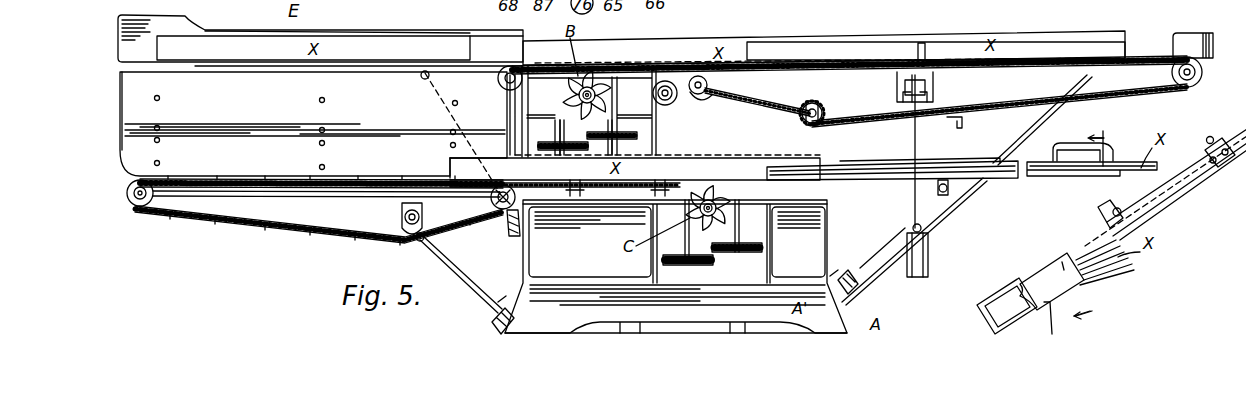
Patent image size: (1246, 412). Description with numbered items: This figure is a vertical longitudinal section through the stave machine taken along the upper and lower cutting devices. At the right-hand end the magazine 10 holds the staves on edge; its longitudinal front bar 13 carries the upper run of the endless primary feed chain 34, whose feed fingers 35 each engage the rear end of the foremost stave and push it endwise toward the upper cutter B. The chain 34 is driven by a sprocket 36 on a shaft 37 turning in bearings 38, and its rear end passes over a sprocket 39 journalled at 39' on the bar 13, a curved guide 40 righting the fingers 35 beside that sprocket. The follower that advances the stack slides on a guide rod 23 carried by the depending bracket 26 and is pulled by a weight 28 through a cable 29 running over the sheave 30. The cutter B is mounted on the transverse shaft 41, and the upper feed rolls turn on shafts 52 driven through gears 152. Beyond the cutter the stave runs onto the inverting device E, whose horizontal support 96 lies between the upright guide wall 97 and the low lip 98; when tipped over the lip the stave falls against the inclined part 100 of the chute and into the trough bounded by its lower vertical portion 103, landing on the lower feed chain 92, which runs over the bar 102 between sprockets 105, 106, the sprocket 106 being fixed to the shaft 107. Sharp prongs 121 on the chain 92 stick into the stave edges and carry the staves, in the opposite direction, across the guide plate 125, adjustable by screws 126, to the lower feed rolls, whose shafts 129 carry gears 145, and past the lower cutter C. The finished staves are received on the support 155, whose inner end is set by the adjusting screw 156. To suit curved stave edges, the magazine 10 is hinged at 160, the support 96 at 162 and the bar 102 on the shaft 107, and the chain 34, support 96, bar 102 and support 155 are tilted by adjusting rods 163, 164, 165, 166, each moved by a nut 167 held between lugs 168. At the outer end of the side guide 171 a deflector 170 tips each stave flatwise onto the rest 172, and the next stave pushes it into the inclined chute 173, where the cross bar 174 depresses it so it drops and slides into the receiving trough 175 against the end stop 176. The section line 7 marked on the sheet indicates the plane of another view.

The upright side guide wall 97 is at (370, 29).
The edge or lip 98 is at (403, 62).
The stave support 96 is at (478, 62).
The downwardly inclined part of plate or chute 100 is at (313, 124).
The lower vertical portion of plate 103 is at (194, 119).
The feed fingers or sharp edged prongs 121 is at (432, 178).
The adjusting rod or link 164 is at (432, 93).
The lower feed chain 92 is at (247, 224).
The sprocket 105 is at (160, 208).
The bar or support 102 is at (325, 224).
The sprocket 106 is at (426, 216).
The adjusting rod or link 165 is at (460, 281).
The adjusting nut 167 is at (490, 326).
The lugs 168 is at (510, 286).
The shaft 107 is at (516, 195).
The adjustable support or guide plate 125 is at (573, 182).
The adjusting screws 126 is at (600, 184).
The magazine 10 is at (824, 38).
The longitudinal front bar 13 is at (1122, 70).
The sprocket 39 is at (1007, 105).
The journal of sprocket 39' is at (1207, 72).
The curved plate or guide 40 is at (1185, 33).
The feed fingers 35 is at (926, 45).
The horizontal guide rod 23 is at (926, 80).
The front bracket 26 is at (931, 95).
The cable 29 is at (921, 147).
The weight 28 is at (930, 262).
The sheave 30 is at (840, 120).
The shaft 37 is at (718, 91).
The bearings 38 is at (695, 96).
The sprocket 36 is at (706, 100).
The hinge connection 160 is at (665, 80).
The hinge connection 162 is at (508, 83).
The shaft 41 is at (596, 88).
The shafts 52 is at (562, 138).
The gear 152 is at (640, 140).
The shafts 129 is at (735, 259).
The gears 145 is at (660, 260).
The adjusting screw 156 is at (830, 190).
The support 155 is at (1008, 183).
The upright side guide 171 is at (878, 161).
The plate or rest 172 is at (900, 190).
The endless chain 34 is at (1082, 101).
The adjusting rod or link 163 is at (955, 219).
The adjusting rod or link 166 is at (888, 238).
The deflector 170 is at (1070, 145).
The section line 7 is at (1100, 225).
The inclined chute 173 is at (1190, 186).
The cross bar or finger 174 is at (1215, 140).
The receiving magazine or trough 175 is at (1077, 275).
The lower end wall or stop 176 is at (985, 320).